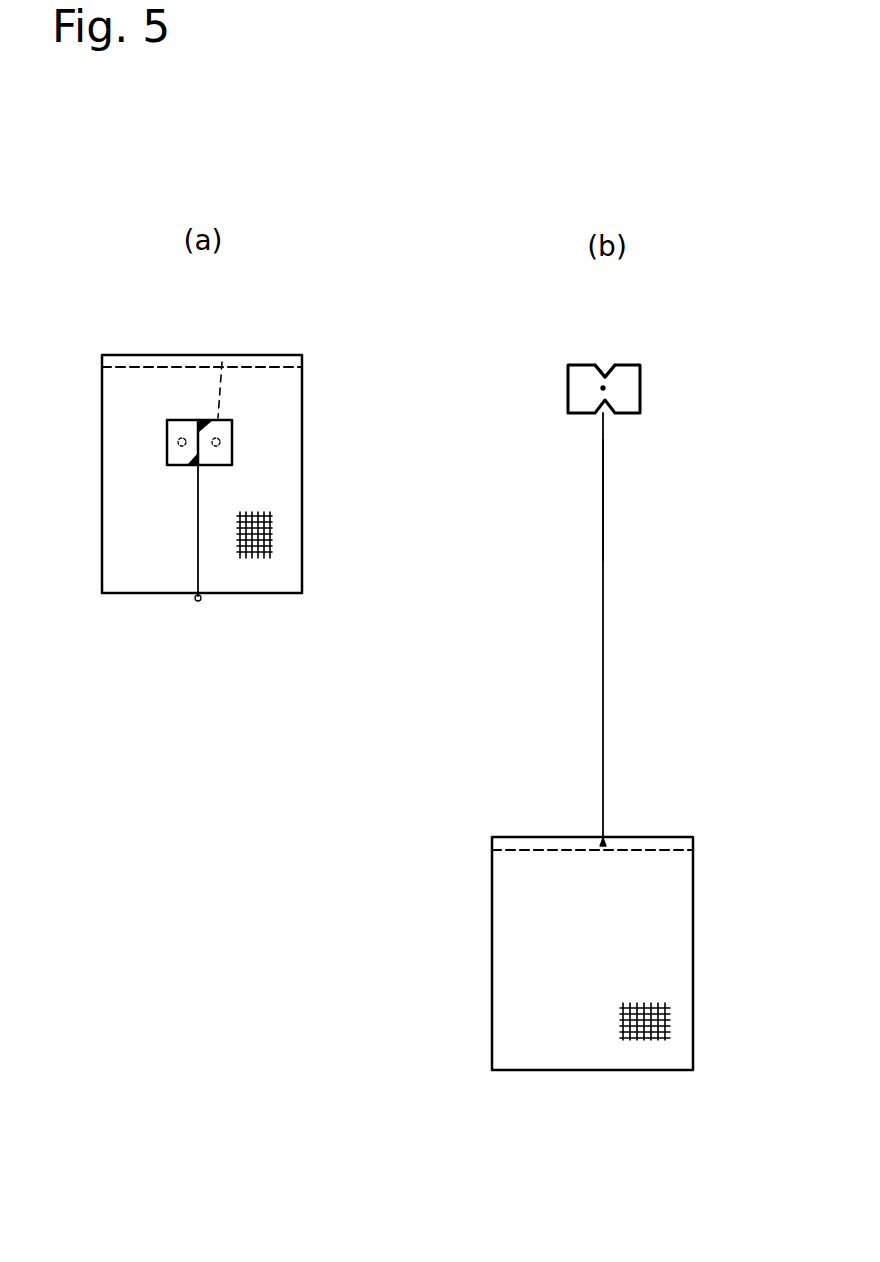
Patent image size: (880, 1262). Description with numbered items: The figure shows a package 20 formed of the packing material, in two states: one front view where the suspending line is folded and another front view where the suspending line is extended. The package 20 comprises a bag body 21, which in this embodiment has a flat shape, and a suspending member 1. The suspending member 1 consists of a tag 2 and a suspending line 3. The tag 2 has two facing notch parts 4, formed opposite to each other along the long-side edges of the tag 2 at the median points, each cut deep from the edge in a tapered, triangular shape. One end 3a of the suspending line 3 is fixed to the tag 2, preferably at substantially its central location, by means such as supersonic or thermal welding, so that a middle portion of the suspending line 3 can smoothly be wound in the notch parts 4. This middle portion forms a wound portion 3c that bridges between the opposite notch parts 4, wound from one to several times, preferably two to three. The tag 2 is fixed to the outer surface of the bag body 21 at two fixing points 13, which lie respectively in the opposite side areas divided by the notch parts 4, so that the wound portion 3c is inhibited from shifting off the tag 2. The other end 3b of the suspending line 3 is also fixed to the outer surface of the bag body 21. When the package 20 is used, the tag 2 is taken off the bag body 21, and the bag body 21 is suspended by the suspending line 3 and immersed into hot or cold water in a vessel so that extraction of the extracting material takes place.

The suspending member 1 is at (188, 528).
The tag 2 is at (167, 445).
The suspending line 3 is at (198, 565).
The one end of the suspending line 3a is at (601, 388).
The other end of the suspending line 3b is at (605, 838).
The wound portion 3c is at (167, 430).
The notch part 4 is at (604, 366).
The fixing point 13 is at (221, 368).
The package 20 is at (341, 357).
The bag body 21 is at (290, 472).